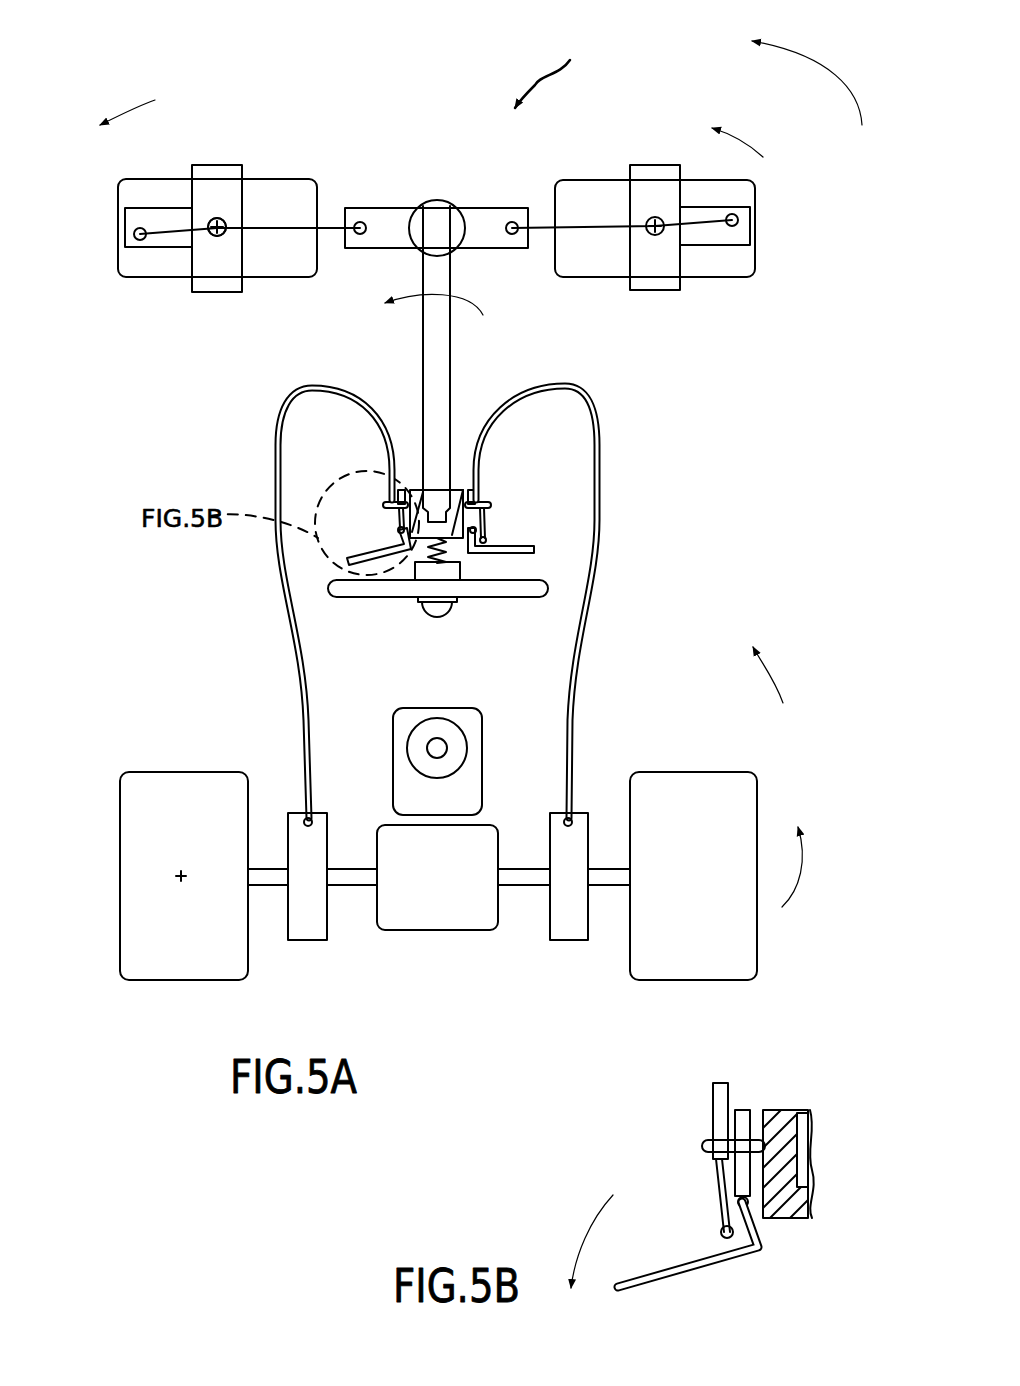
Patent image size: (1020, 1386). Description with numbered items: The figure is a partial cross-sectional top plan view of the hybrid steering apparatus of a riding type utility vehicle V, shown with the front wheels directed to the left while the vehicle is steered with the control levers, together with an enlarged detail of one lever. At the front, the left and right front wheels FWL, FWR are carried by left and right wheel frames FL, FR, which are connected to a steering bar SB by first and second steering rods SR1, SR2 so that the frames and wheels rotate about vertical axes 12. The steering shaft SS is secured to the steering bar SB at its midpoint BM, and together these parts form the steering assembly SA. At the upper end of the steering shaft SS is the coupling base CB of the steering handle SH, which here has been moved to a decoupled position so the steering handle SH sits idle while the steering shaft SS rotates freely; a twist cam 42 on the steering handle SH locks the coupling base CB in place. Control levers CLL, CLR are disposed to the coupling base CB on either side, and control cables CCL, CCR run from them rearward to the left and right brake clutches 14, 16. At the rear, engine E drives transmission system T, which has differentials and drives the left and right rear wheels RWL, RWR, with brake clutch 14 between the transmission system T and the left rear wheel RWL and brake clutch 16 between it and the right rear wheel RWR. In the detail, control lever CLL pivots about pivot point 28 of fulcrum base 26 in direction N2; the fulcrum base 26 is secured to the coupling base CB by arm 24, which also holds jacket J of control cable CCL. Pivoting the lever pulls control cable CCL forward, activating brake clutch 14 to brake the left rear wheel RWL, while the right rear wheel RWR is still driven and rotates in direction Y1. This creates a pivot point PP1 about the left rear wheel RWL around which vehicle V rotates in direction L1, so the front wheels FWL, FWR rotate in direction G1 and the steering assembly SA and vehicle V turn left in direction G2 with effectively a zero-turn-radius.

In FIG. 5A, the left front wheel FWL is at (127, 270).
In FIG. 5A, the right front wheel FWR is at (744, 268).
In FIG. 5A, the left wheel frame FL is at (200, 292).
In FIG. 5A, the right wheel frame FR is at (645, 168).
In FIG. 5A, the vertical axes 12 is at (211, 222).
In FIG. 5A, the first steering rod SR1 is at (572, 230).
In FIG. 5A, the second steering rod SR2 is at (277, 228).
In FIG. 5A, the steering bar SB is at (386, 215).
In FIG. 5A, the midpoint BM is at (437, 222).
In FIG. 5A, the steering shaft SS is at (446, 418).
In FIG. 5A, the direction of front wheel rotation G1 is at (133, 100).
In FIG. 5A, the direction of turn G2 is at (480, 318).
In FIG. 5A, the steering assembly SA is at (556, 69).
In FIG. 5A, the direction of vehicle rotation L1 is at (830, 72).
In FIG. 5A, the coupling base CB is at (418, 492).
In FIG. 5B, the coupling base CB is at (790, 1122).
In FIG. 5A, the steering handle SH is at (513, 598).
In FIG. 5A, the twist cam 42 is at (425, 614).
In FIG. 5A, the left control lever CLL is at (368, 567).
In FIG. 5B, the left control lever CLL is at (650, 1288).
In FIG. 5A, the right control lever CLR is at (528, 548).
In FIG. 5A, the left control cable CCL is at (303, 657).
In FIG. 5B, the left control cable CCL is at (718, 1188).
In FIG. 5A, the right control cable CCR is at (578, 657).
In FIG. 5A, the engine E is at (485, 735).
In FIG. 5A, the transmission system T is at (440, 930).
In FIG. 5A, the left brake clutch 14 is at (308, 940).
In FIG. 5A, the right brake clutch 16 is at (568, 940).
In FIG. 5A, the left rear wheel RWL is at (178, 980).
In FIG. 5A, the right rear wheel RWR is at (712, 772).
In FIG. 5A, the pivot point PP1 is at (181, 876).
In FIG. 5A, the vehicle V is at (776, 685).
In FIG. 5A, the direction of right rear wheel rotation Y1 is at (800, 903).
In FIG. 5B, the jacket J is at (712, 1104).
In FIG. 5B, the fulcrum base 26 is at (744, 1110).
In FIG. 5B, the arm 24 is at (703, 1146).
In FIG. 5B, the pivot point 28 is at (738, 1203).
In FIG. 5B, the direction of lever pivoting N2 is at (565, 1241).